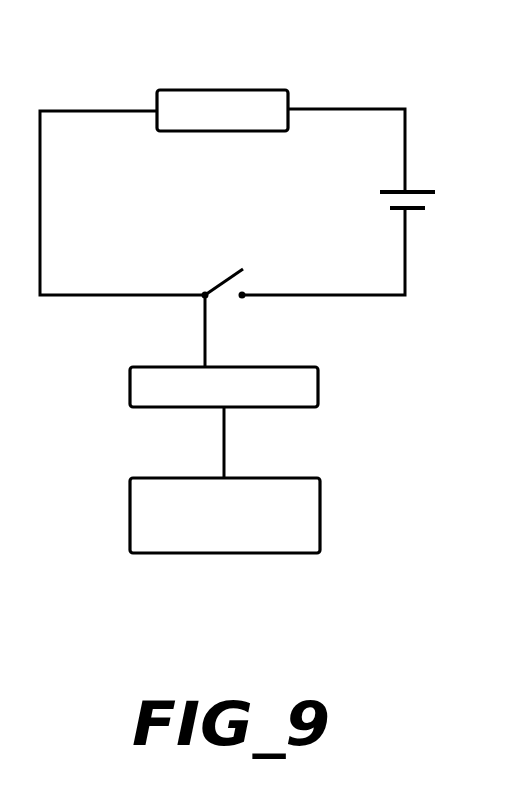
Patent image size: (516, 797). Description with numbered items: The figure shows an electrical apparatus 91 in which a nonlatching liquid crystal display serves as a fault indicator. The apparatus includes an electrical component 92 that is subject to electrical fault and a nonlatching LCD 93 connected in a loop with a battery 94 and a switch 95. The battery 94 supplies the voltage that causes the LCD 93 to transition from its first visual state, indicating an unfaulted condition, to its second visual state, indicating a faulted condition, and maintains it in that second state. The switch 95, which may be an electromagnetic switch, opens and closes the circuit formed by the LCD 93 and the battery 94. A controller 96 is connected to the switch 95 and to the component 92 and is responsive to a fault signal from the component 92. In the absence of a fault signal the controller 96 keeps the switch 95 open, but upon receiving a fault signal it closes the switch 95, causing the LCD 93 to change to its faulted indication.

The electrical apparatus 91 is at (89, 373).
The electrical component 92 is at (225, 553).
The nonlatching LCD 93 is at (255, 90).
The battery 94 is at (390, 207).
The switch 95 is at (221, 281).
The controller 96 is at (318, 383).